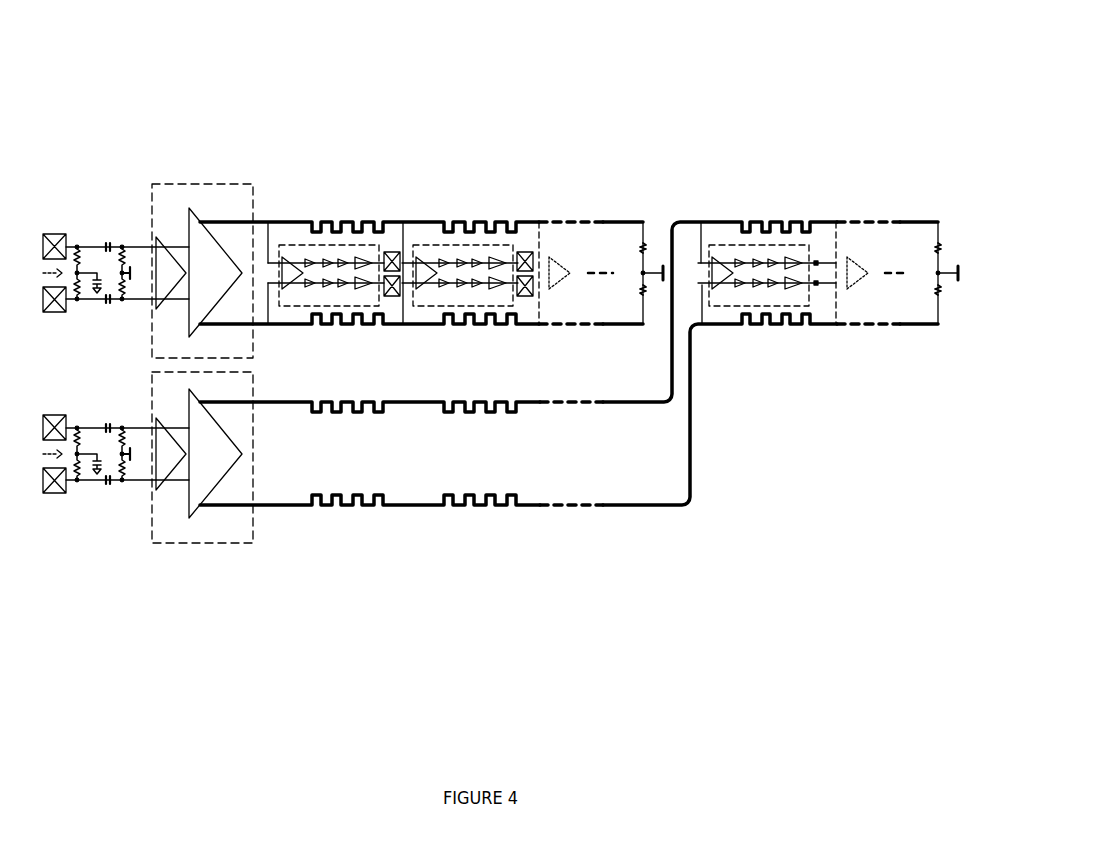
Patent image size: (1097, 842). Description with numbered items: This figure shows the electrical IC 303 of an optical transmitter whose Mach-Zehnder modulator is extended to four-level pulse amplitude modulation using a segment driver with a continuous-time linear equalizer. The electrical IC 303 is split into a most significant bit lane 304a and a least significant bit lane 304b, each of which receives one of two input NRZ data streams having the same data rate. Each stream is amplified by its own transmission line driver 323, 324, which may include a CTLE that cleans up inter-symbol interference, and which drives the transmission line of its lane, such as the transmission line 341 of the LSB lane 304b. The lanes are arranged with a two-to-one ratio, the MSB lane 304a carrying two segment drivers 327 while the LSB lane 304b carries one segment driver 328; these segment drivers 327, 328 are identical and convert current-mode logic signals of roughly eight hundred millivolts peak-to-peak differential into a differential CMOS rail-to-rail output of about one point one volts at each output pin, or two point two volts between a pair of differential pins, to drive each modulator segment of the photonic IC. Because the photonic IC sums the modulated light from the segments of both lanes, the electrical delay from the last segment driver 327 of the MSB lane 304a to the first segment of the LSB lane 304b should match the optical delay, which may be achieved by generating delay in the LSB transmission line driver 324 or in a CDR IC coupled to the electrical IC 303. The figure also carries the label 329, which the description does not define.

The electrical IC 303 is at (191, 301).
The transmission line driver 323 is at (183, 184).
The transmission line driver 324 is at (210, 544).
The most significant bit (MSB) lane 304a is at (453, 225).
The least significant bit (LSB) lane 304b is at (579, 355).
The segment driver 327 is at (290, 245).
The segment driver 328 is at (608, 222).
The distributed amplifier segment 329 is at (728, 307).
The transmission line 341 is at (817, 222).